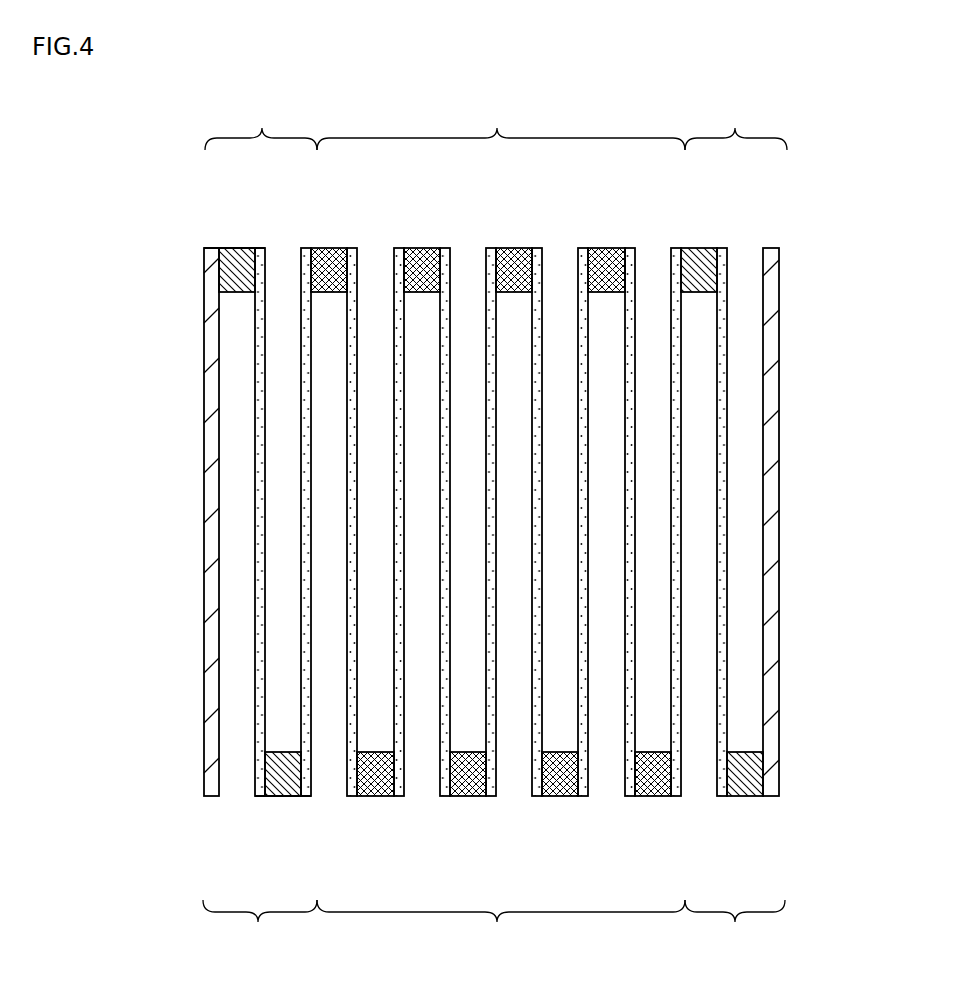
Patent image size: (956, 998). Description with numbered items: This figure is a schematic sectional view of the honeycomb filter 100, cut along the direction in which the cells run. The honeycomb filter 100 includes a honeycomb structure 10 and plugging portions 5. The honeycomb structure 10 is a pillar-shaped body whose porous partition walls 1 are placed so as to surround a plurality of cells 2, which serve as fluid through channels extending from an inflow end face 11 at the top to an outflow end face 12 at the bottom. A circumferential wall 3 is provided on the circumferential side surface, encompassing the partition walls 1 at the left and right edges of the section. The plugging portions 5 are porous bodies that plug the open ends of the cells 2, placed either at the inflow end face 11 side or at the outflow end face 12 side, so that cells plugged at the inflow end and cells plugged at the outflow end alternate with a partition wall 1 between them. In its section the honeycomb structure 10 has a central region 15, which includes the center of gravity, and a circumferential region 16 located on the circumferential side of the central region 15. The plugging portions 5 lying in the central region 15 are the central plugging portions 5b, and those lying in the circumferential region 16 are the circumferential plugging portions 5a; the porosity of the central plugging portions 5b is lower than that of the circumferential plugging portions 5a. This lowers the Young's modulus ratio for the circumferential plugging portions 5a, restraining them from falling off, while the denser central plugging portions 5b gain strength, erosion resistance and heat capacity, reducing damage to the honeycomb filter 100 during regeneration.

The honeycomb filter 100 is at (818, 116).
The honeycomb structure 10 is at (789, 256).
The partition wall 1 is at (627, 265).
The cell 2 is at (553, 315).
The circumferential wall 3 is at (213, 405).
The plugging portion 5 is at (518, 528).
The circumferential plugging portion 5a is at (251, 248).
The central plugging portion 5b is at (437, 248).
The inflow end face 11 is at (226, 227).
The outflow end face 12 is at (241, 815).
The central region 15 is at (501, 529).
The circumferential region 16 is at (495, 529).